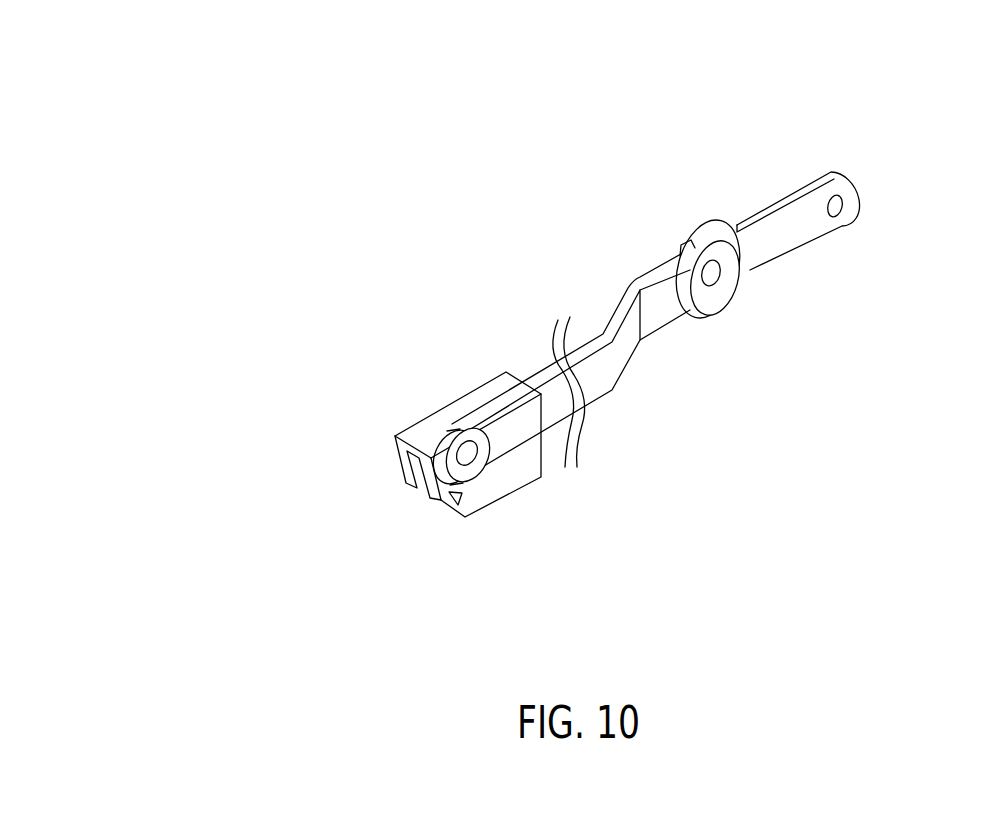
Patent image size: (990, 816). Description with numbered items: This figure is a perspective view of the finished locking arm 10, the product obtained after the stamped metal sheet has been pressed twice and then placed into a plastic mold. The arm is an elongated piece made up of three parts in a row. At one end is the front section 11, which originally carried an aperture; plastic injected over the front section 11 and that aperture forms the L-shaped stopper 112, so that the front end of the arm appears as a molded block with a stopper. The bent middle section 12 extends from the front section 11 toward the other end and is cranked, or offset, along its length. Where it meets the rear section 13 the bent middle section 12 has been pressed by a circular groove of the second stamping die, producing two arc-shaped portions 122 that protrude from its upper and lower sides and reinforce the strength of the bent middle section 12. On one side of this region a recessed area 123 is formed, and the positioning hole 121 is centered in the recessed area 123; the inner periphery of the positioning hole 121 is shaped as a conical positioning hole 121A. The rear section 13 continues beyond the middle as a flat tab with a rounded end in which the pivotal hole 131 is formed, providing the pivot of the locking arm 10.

The locking arm 10 is at (248, 142).
The front section 11 is at (448, 428).
The L-shaped stopper 112 is at (398, 455).
The bent middle section 12 is at (657, 267).
The positioning hole 121 is at (713, 293).
The conical positioning hole 121A is at (712, 273).
The arc-shaped portions 122 is at (692, 232).
The recessed area 123 is at (730, 264).
The rear section 13 is at (803, 188).
The pivotal hole 131 is at (843, 207).